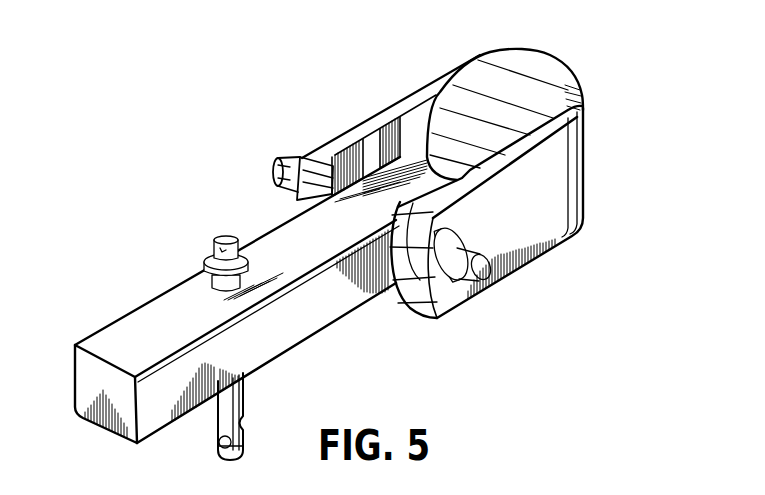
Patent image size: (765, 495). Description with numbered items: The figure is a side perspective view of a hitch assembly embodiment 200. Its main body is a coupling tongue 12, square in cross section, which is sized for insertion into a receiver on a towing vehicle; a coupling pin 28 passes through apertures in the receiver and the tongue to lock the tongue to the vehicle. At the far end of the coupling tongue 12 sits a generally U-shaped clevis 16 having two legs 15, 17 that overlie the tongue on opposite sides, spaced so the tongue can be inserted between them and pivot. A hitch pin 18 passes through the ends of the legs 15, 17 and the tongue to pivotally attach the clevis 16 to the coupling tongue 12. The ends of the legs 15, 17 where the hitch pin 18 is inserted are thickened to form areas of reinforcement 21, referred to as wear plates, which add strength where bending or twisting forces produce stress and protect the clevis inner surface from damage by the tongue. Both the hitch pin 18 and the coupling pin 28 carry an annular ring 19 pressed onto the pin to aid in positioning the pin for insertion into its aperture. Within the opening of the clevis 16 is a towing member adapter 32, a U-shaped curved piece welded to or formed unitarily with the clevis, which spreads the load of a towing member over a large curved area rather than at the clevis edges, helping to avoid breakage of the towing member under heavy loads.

The hitch assembly embodiment 200 is at (368, 238).
The coupling tongue 12 is at (160, 318).
The leg 15 is at (412, 102).
The clevis 16 is at (547, 230).
The leg 17 is at (513, 153).
The hitch pin 18 is at (298, 166).
The annular ring 19 is at (207, 256).
The area of reinforcement 21 is at (355, 147).
The coupling pin 28 is at (233, 395).
The towing member adapter 32 is at (540, 62).